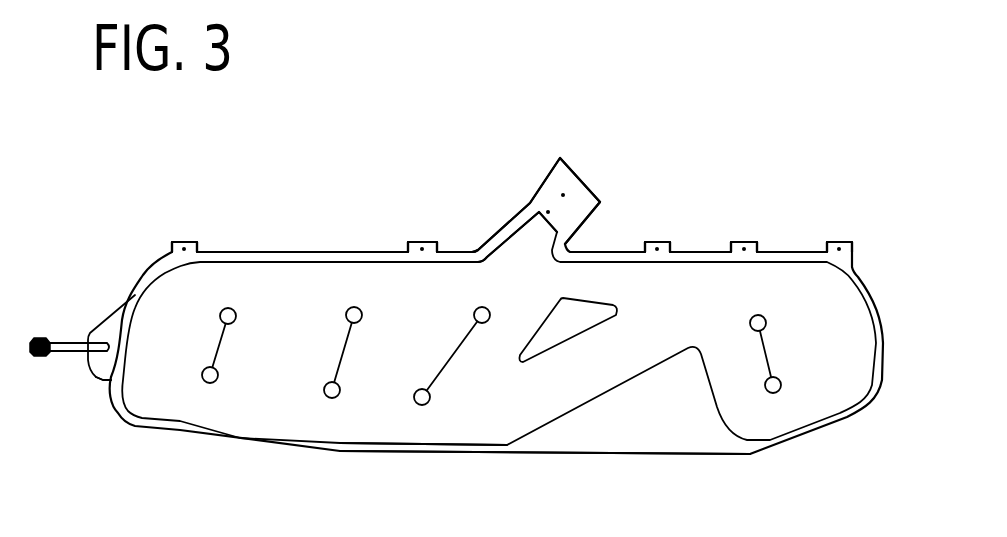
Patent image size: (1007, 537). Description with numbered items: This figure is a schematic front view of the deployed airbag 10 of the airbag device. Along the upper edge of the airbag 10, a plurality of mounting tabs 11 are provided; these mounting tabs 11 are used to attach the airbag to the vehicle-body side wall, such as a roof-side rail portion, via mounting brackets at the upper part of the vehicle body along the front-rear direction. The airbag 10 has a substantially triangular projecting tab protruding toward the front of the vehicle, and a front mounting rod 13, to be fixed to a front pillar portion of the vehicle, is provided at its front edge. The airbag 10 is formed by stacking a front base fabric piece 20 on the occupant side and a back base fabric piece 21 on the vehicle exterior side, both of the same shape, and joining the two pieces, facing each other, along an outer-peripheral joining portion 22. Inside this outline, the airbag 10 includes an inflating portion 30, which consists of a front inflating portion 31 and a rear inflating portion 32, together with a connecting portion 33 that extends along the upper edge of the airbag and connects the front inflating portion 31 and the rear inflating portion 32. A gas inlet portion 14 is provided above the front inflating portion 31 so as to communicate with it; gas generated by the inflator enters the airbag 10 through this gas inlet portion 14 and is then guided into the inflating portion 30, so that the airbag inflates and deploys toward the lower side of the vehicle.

The airbag 10 is at (290, 218).
The mounting tabs 11 is at (185, 240).
The front mounting rod 13 is at (33, 342).
The gas inlet portion 14 is at (518, 240).
The front base fabric piece 20 is at (437, 453).
The back base fabric piece 21 is at (423, 481).
The outer-peripheral joining portion 22 is at (135, 295).
The inflating portion 30 is at (100, 378).
The front inflating portion 31 is at (277, 360).
The rear inflating portion 32 is at (825, 390).
The connecting portion 33 is at (597, 273).